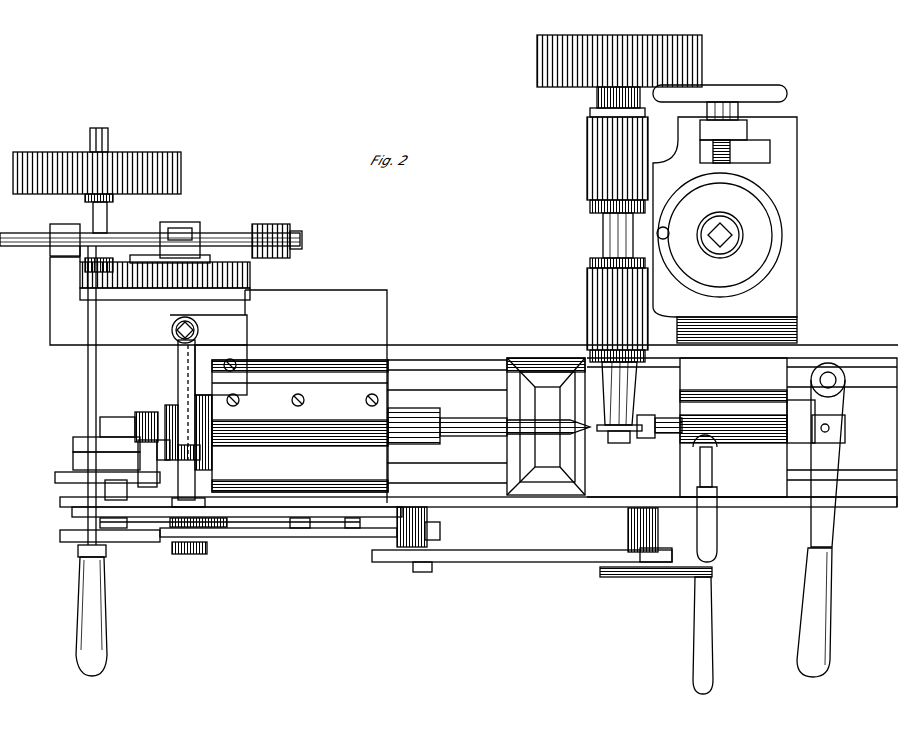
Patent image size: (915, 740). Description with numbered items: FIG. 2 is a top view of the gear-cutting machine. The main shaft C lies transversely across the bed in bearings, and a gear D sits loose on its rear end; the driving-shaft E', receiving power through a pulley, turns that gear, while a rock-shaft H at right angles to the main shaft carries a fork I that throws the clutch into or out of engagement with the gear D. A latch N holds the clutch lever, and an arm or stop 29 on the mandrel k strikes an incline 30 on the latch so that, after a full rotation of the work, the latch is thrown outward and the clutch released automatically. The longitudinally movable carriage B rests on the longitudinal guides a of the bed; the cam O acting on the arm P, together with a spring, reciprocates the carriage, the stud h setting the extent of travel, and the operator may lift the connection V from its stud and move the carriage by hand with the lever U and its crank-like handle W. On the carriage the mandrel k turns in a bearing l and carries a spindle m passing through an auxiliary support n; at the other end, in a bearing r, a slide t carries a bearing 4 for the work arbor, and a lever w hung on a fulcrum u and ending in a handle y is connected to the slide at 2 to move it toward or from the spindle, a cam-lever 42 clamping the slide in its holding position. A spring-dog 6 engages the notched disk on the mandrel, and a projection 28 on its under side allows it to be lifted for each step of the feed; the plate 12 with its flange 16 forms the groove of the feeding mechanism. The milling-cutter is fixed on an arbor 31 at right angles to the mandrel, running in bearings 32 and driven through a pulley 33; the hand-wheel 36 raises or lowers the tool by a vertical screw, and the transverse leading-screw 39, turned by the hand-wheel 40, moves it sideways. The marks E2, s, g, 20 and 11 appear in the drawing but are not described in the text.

The driving-shaft E' is at (104, 165).
The vertical shaft E2 is at (106, 237).
The rock-shaft H is at (158, 240).
The gear D is at (158, 286).
The longitudinal guides a is at (80, 283).
The fork I is at (82, 395).
The latch N is at (91, 610).
The spring-dog 6 is at (209, 412).
The carriage B is at (474, 322).
The bearing l is at (300, 426).
The mandrel k is at (414, 426).
The spindle m is at (515, 421).
The auxiliary support n is at (546, 426).
The pulley 33 is at (619, 76).
The bearings 32 is at (617, 239).
The arbor 31 is at (609, 235).
The fulcrum u is at (619, 402).
The slide t is at (659, 419).
The hand-wheel 40 is at (720, 104).
The transverse leading-screw 39 is at (735, 151).
The hand-wheel 36 is at (719, 235).
The bearing r is at (747, 427).
The lever w is at (828, 455).
The connection 2 is at (829, 428).
The handle y is at (814, 612).
The cam-lever 42 is at (702, 460).
The post s is at (636, 530).
The connection V is at (522, 547).
The bracket g is at (428, 545).
The stud h is at (417, 574).
The lever U is at (656, 562).
The crank-like handle W is at (712, 635).
The block 20 is at (117, 427).
The bearing 4 is at (164, 410).
The projection 28 is at (169, 423).
The plate 12 is at (106, 445).
The flange 16 is at (106, 461).
The arm or stop 29 is at (148, 463).
The pin 11 is at (166, 458).
The incline 30 is at (116, 490).
The cam O is at (110, 542).
The arm P is at (278, 541).
The main shaft C is at (189, 557).